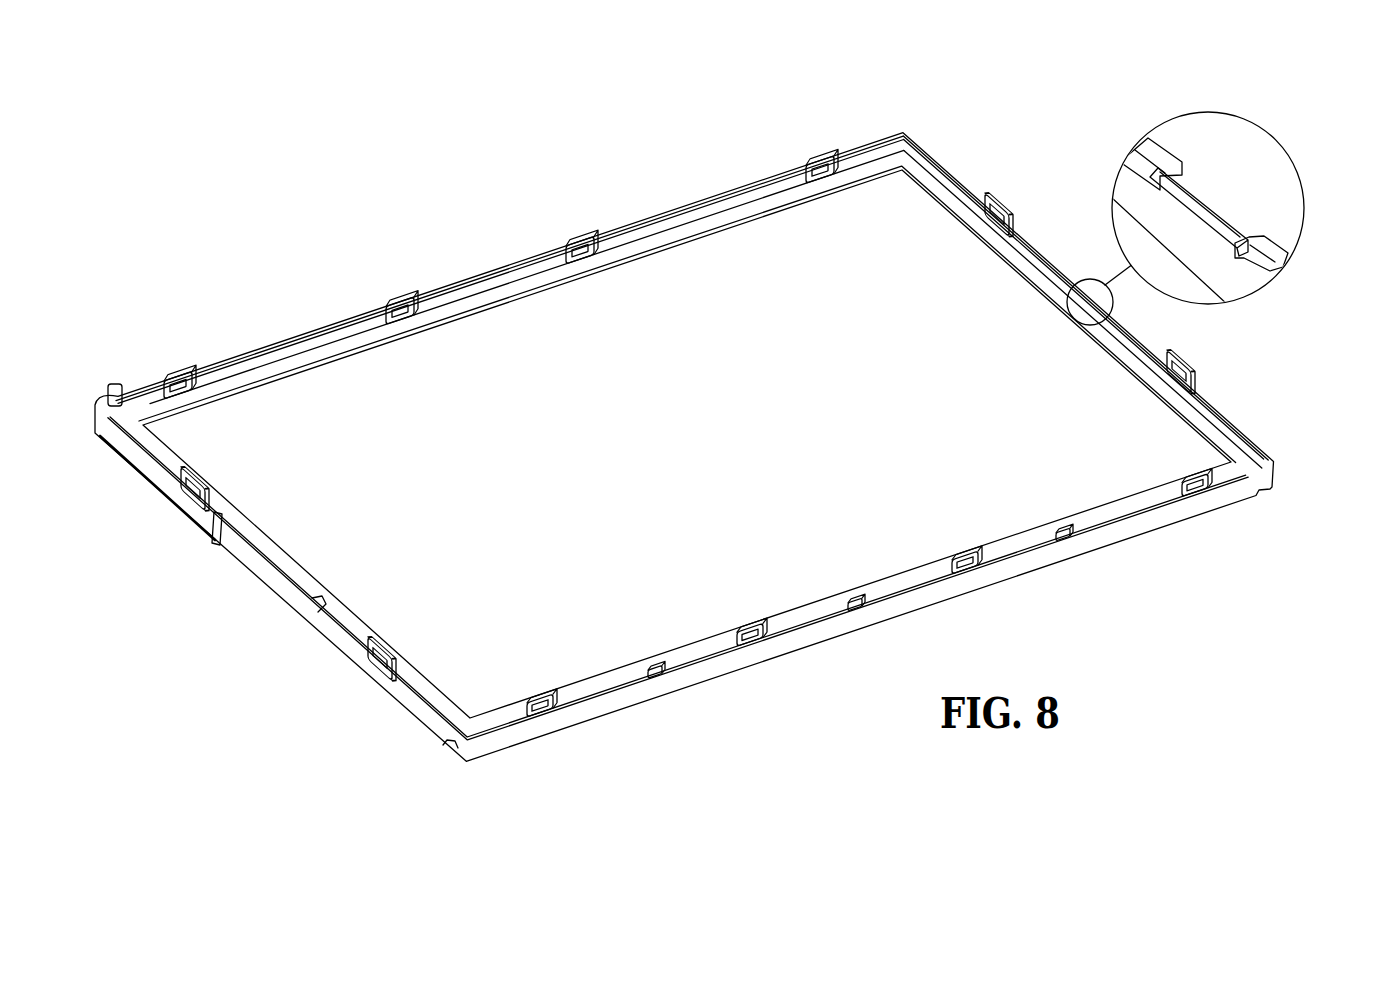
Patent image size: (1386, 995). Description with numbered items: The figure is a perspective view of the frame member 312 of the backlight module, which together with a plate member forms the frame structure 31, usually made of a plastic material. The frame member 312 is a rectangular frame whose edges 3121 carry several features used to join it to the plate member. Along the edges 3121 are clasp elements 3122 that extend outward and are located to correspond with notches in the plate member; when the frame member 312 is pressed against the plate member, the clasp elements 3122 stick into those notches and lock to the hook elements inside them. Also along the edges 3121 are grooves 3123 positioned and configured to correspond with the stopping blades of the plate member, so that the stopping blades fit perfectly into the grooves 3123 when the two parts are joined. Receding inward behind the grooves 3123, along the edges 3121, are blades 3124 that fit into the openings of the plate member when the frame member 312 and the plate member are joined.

The frame structure 31 is at (247, 342).
The frame member 312 is at (436, 191).
The edges 3121 is at (1227, 420).
The clasp elements 3122 is at (1183, 365).
The grooves 3123 is at (1233, 203).
The blades 3124 is at (1182, 217).